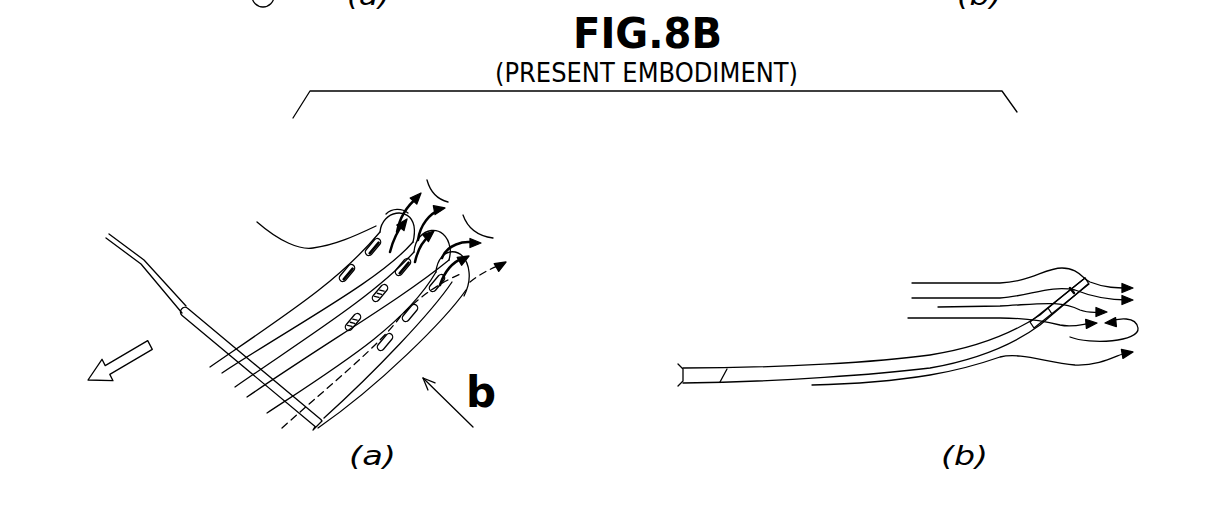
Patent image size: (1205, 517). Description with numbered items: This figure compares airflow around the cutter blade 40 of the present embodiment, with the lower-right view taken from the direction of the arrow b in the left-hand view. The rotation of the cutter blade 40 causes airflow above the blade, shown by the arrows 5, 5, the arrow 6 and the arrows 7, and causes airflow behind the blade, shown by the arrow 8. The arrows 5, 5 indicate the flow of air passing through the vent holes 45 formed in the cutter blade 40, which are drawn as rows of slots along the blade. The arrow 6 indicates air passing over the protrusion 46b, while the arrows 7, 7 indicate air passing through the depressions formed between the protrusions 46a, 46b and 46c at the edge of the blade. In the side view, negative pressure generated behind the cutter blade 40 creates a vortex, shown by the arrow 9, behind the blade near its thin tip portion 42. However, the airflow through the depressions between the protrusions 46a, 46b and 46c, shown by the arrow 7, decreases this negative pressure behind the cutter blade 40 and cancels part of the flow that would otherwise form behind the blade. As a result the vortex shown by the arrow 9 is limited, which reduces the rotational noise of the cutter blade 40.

The cutter blade 40 is at (597, 274).
The thin film / surface sheet 42 is at (755, 215).
The vent holes 45 is at (370, 243).
The protrusion 46a is at (390, 218).
The protrusion 46b is at (438, 232).
The protrusion 46c is at (465, 268).
The arrow indicating airflow through vent holes 5 is at (960, 307).
The arrow indicating airflow over protrusion 6 is at (673, 327).
The arrow indicating airflow through depressions 7 is at (799, 242).
The arrow indicating airflow behind cutter blade 8 is at (708, 343).
The arrow indicating vortex 9 is at (1089, 336).